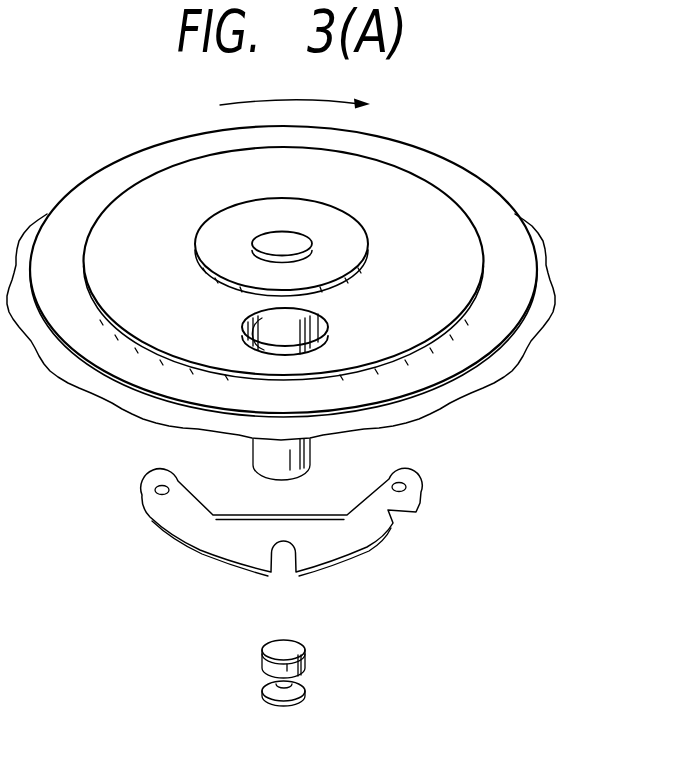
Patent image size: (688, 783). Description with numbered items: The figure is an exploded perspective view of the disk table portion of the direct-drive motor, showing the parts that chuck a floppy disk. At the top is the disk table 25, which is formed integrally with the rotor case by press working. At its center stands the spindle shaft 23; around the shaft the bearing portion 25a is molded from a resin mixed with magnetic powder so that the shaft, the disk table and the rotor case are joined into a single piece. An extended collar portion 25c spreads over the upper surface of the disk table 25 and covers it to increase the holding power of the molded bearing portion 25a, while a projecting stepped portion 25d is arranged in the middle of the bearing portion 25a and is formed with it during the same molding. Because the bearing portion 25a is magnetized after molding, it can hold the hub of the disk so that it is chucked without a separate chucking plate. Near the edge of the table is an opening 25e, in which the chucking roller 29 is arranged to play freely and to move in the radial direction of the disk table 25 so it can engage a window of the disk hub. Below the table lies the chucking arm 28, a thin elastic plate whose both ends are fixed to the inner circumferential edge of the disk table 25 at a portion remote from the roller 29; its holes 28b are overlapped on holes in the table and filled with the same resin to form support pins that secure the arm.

The spindle shaft 23 is at (273, 237).
The disk table 25 is at (501, 310).
The bearing portion 25a is at (457, 235).
The extended collar portion 25c is at (132, 232).
The projecting stepped portion 25d is at (347, 233).
The opening 25e is at (252, 318).
The chucking arm 28 is at (320, 550).
The holes 28b is at (163, 483).
The chucking roller 29 is at (280, 642).